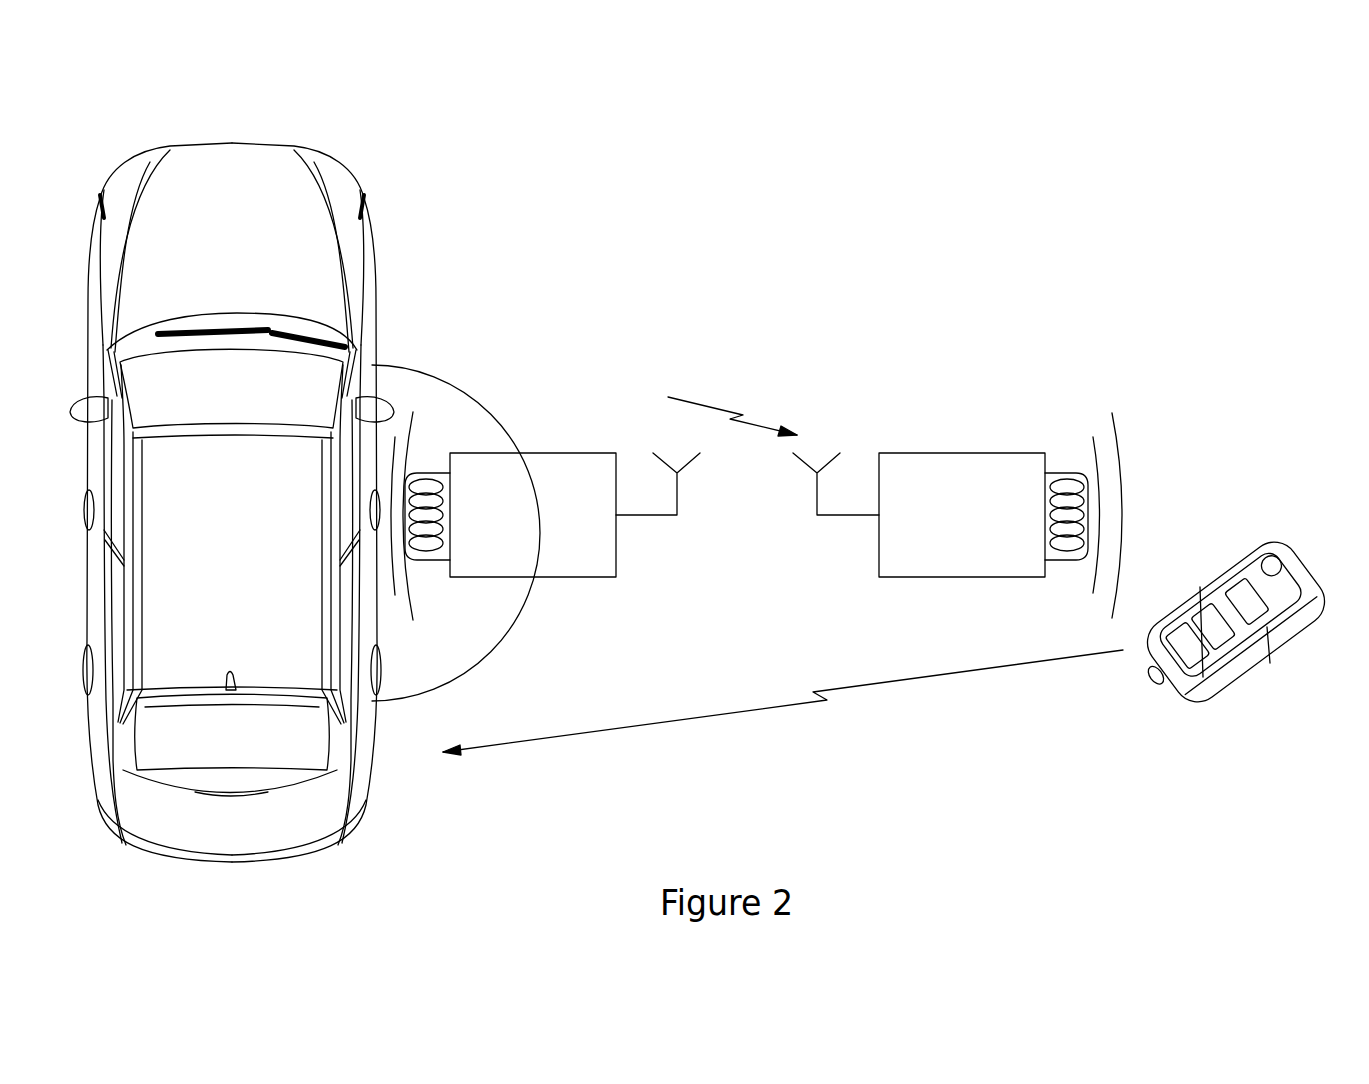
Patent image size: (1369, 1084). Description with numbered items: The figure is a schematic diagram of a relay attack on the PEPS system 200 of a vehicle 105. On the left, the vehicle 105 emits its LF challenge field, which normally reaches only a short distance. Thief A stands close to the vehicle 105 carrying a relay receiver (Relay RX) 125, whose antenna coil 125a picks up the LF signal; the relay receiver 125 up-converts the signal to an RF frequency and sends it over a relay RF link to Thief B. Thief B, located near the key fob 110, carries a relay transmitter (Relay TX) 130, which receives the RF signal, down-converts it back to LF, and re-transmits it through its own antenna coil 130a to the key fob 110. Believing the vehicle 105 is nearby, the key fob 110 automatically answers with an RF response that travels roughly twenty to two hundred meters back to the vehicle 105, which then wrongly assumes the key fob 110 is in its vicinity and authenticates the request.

The vehicle 105 is at (355, 178).
The key fob 110 is at (1284, 550).
The relay receiver (Relay RX) 125 is at (562, 578).
The relay receiver LF antenna coil 125a is at (438, 473).
The relay transmitter (Relay TX) 130 is at (918, 578).
The relay transmitter LF antenna coil 130a is at (1058, 473).
The PEPS system 200 is at (1090, 120).